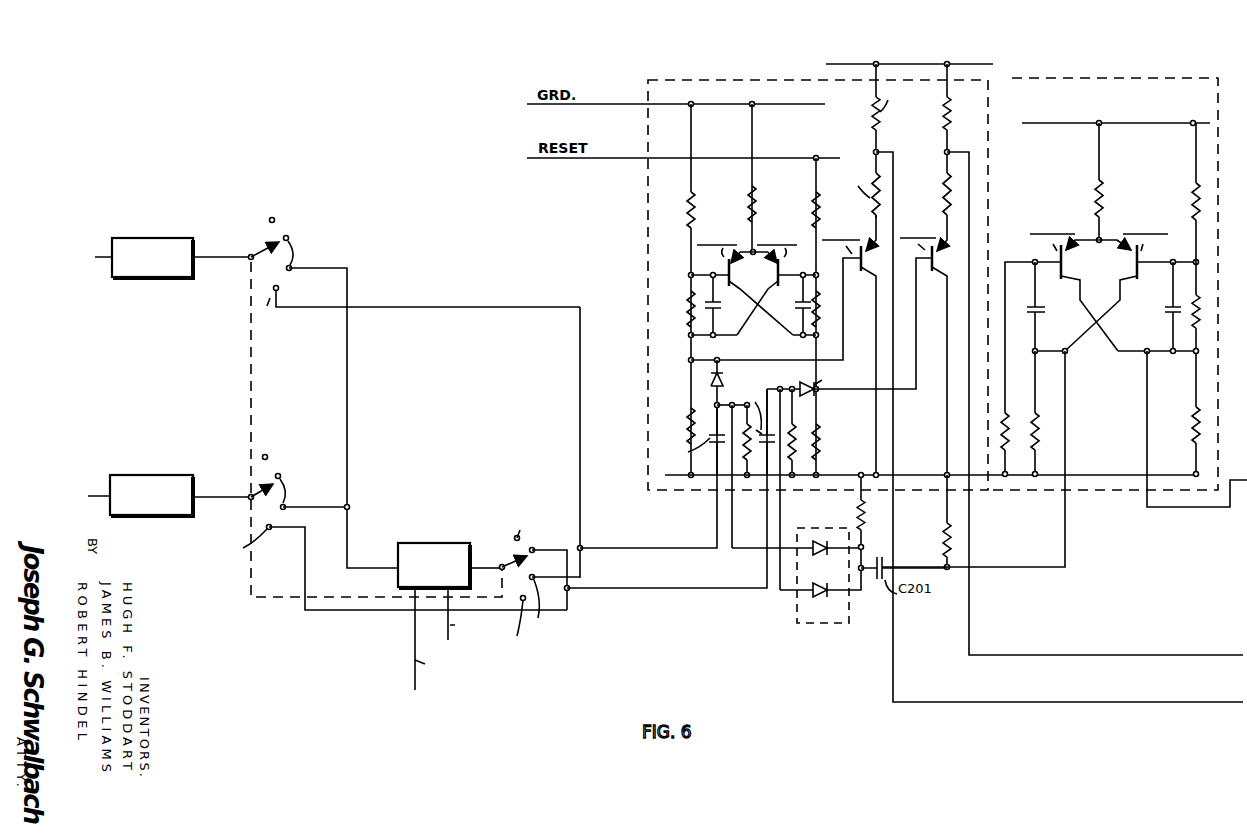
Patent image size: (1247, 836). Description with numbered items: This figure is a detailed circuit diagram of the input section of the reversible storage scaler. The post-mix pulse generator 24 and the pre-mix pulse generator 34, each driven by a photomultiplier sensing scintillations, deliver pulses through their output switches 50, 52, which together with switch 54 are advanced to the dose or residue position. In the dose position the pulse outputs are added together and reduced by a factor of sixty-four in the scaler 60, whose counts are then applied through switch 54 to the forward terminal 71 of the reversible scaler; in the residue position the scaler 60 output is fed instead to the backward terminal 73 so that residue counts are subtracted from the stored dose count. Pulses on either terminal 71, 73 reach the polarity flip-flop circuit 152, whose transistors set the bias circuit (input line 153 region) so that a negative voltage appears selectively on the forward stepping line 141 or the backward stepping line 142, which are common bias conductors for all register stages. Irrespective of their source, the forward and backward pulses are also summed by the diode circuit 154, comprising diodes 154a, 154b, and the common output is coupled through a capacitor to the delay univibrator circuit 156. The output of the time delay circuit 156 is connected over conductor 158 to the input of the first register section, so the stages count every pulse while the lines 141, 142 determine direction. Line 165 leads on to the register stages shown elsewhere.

The pulse generator 24 is at (165, 245).
The pulse generator 34 is at (151, 480).
The output switch 50 is at (273, 190).
The output switch 52 is at (280, 422).
The switch 54 is at (522, 520).
The scaler 60 is at (450, 591).
The forward terminal 71 is at (693, 575).
The backward terminal 73 is at (699, 547).
The forward stepping line 141 is at (1183, 685).
The backward stepping line 142 is at (1184, 639).
The polarity flip-flop circuit 152 is at (759, 82).
The input line 153 is at (907, 295).
The diode circuit 154 is at (795, 607).
The diode 154a is at (838, 522).
The diode 154b is at (824, 598).
The delay univibrator circuit 156 is at (1129, 78).
The input of the first register section 158 is at (1177, 508).
The scaler connection line to FIG. 8 165 is at (460, 639).